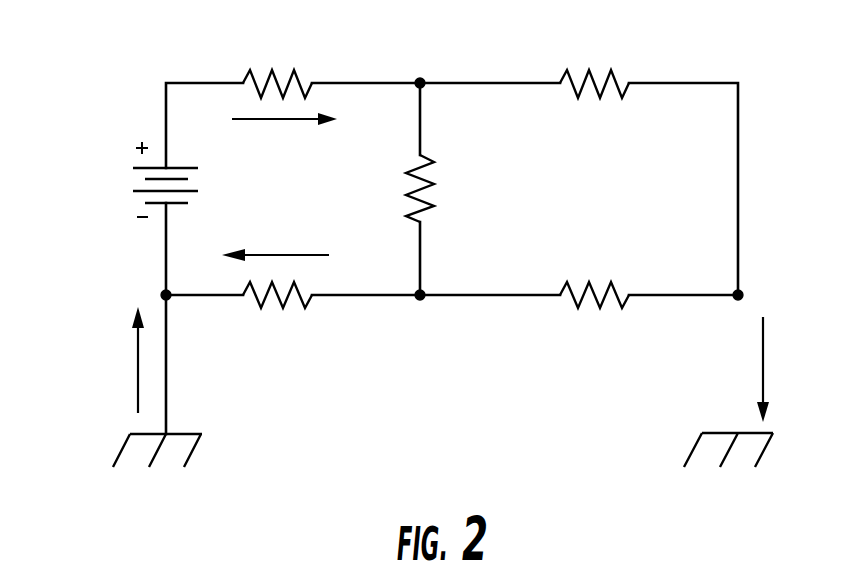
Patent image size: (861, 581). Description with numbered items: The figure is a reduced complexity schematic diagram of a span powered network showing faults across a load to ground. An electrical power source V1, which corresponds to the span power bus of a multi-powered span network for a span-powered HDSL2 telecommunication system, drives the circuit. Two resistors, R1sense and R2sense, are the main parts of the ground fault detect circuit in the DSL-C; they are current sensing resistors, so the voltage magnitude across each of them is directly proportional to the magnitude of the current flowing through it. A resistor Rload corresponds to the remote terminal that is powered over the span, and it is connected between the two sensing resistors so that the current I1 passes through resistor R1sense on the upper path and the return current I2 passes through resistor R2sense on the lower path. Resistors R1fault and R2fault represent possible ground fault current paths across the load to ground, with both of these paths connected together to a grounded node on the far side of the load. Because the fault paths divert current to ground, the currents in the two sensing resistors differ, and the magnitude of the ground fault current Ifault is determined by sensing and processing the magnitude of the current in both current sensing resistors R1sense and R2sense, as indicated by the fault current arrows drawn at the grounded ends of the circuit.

The electrical power source V1 is at (133, 179).
The current sensing resistor R1sense is at (290, 59).
The ground fault current path resistor R1fault is at (599, 59).
The load resistor Rload is at (463, 188).
The current sensing resistor R2sense is at (286, 323).
The ground fault current path resistor R2fault is at (597, 266).
The current through first sensing resistor I1 is at (284, 136).
The current through second sensing resistor I2 is at (275, 242).
The ground fault current Ifault is at (433, 364).